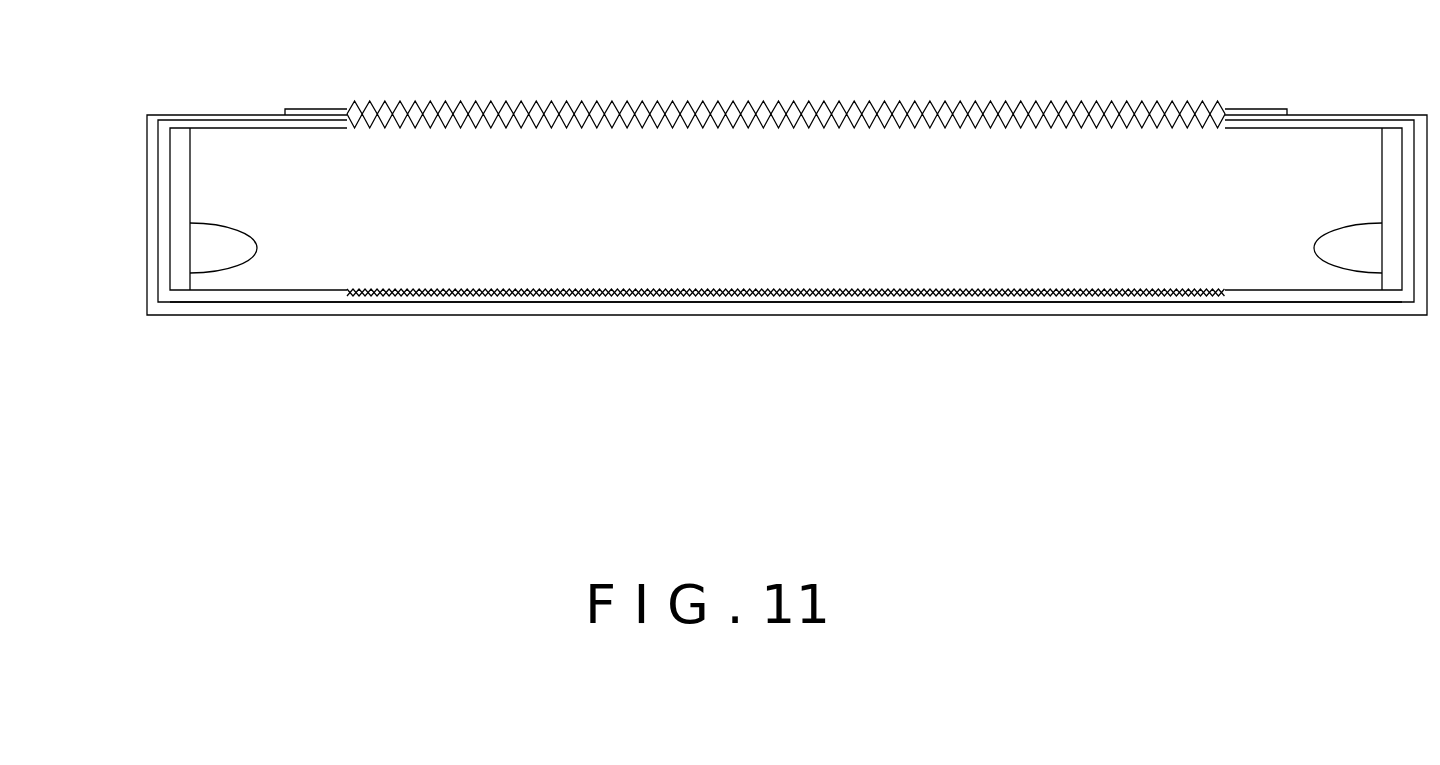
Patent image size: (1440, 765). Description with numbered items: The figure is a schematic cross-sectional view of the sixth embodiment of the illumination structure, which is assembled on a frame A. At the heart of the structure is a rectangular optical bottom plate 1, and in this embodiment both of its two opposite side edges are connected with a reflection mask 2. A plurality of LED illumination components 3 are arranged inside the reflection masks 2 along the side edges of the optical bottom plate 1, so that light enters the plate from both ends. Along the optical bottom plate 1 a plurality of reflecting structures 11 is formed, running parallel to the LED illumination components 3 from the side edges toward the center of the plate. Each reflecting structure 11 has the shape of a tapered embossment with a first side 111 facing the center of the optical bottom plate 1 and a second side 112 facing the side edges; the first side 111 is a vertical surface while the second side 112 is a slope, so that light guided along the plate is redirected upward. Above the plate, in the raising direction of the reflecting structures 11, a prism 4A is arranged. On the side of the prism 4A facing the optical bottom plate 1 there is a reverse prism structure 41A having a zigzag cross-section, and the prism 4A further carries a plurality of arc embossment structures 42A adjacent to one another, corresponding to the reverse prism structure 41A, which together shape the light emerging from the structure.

The frame A is at (585, 317).
The reflection mask 2 is at (1337, 120).
The optical bottom plate 1 is at (1030, 303).
The LED illumination component 3 is at (1355, 262).
The prism 4A is at (786, 82).
The reverse prism structure 41A is at (1078, 103).
The arc embossment structures 42A is at (1030, 103).
The reflecting structures 11 is at (785, 366).
The first side 111 is at (952, 290).
The second side 112 is at (967, 290).